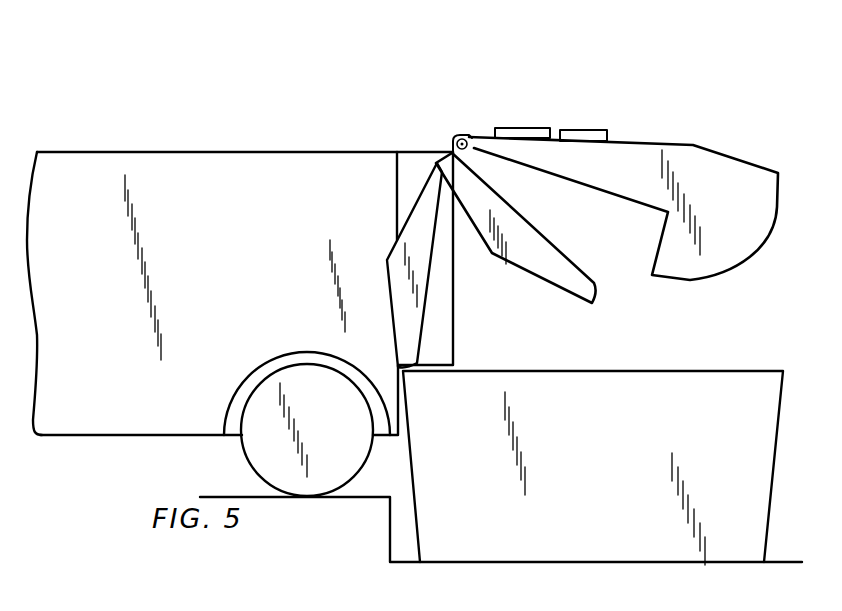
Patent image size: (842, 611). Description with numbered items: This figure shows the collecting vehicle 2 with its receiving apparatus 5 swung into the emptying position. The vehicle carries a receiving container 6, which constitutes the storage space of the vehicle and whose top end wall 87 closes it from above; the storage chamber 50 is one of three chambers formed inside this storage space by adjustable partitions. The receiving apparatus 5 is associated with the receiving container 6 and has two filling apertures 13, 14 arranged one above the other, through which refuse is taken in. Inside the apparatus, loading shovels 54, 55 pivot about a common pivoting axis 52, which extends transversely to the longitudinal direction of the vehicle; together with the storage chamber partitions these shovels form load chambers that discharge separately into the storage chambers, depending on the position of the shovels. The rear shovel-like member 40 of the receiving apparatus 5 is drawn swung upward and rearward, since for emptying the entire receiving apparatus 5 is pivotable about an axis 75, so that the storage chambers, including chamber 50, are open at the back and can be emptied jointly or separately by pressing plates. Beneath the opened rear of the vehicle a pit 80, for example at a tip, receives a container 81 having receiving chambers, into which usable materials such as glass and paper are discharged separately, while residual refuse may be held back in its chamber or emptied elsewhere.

The collecting vehicle 2 is at (262, 65).
The receiving apparatus 5 is at (746, 92).
The receiving container 6 is at (153, 106).
The filling aperture 13 is at (522, 128).
The filling aperture 14 is at (586, 130).
The bucket 40 is at (722, 268).
The storage chamber 50 is at (138, 427).
The common pivoting axis 52 is at (437, 163).
The loading shovel 54 is at (412, 330).
The loading shovel 55 is at (544, 263).
The axis 75 is at (456, 137).
The pit 80 is at (390, 541).
The container 81 is at (617, 380).
The top end wall 87 is at (214, 152).